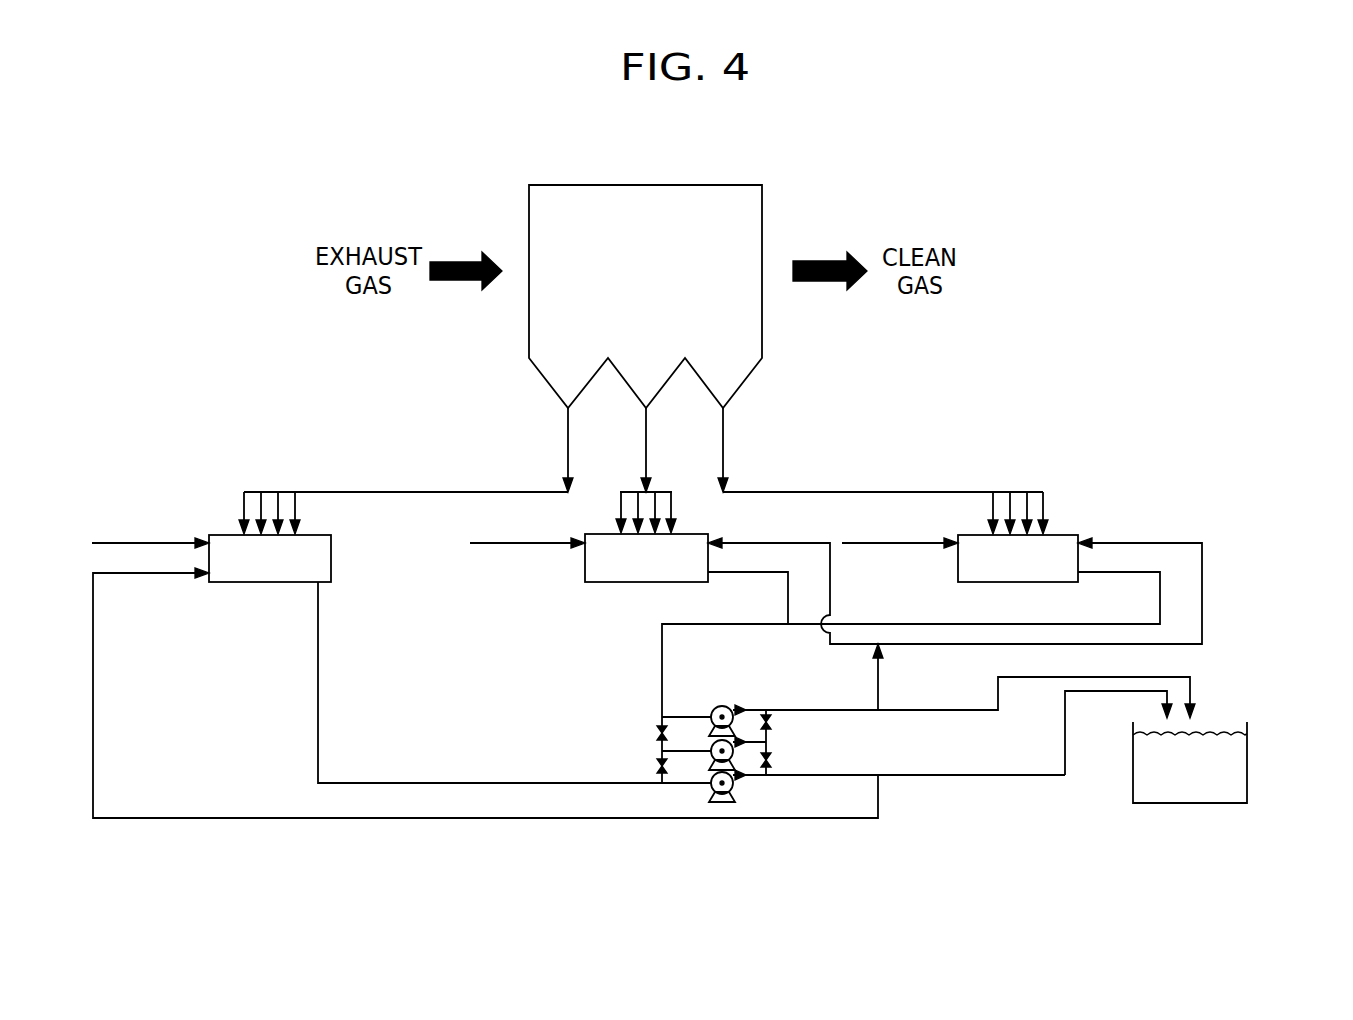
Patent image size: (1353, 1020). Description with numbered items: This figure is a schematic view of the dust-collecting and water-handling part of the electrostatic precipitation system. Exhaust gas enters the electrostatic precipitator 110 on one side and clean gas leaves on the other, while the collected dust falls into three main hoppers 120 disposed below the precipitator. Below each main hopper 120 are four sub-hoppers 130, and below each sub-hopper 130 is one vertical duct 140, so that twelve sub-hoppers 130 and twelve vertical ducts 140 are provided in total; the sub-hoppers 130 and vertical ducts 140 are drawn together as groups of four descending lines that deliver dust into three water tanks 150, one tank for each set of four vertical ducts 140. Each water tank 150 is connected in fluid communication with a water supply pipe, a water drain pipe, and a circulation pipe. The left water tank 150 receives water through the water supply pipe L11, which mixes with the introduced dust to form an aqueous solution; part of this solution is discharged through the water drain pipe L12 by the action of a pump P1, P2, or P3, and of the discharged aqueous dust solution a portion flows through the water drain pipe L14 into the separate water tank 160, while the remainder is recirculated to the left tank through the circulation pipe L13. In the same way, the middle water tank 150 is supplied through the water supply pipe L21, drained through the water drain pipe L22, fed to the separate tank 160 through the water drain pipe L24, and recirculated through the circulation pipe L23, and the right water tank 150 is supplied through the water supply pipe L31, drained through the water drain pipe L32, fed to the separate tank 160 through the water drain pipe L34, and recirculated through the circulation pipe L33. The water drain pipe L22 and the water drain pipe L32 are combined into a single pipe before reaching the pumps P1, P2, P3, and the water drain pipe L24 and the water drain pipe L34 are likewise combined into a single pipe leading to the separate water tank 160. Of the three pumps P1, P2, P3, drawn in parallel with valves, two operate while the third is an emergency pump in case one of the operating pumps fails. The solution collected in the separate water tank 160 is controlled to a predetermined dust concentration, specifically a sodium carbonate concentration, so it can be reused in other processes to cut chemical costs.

The electrostatic precipitator 110 is at (665, 250).
The main hopper 120 is at (587, 376).
The sub-hopper 130 is at (693, 481).
The vertical duct 140 is at (298, 514).
The water tank 150 is at (251, 583).
The separate water tank 160 is at (1249, 766).
The water supply pipe L11 is at (121, 541).
The water drain pipe L12 is at (320, 701).
The circulation pipe L13 is at (95, 716).
The water drain pipe L14 is at (1006, 777).
The water supply pipe L21 is at (525, 542).
The water drain pipe L22 is at (765, 577).
The circulation pipe L23 is at (805, 542).
The water drain pipe L24 is at (1229, 683).
The water supply pipe L31 is at (911, 542).
The water drain pipe L32 is at (1140, 574).
The circulation pipe L33 is at (1178, 542).
The water drain pipe L34 is at (1147, 676).
The pump P1 is at (742, 790).
The pump P2 is at (707, 740).
The pump P3 is at (712, 706).